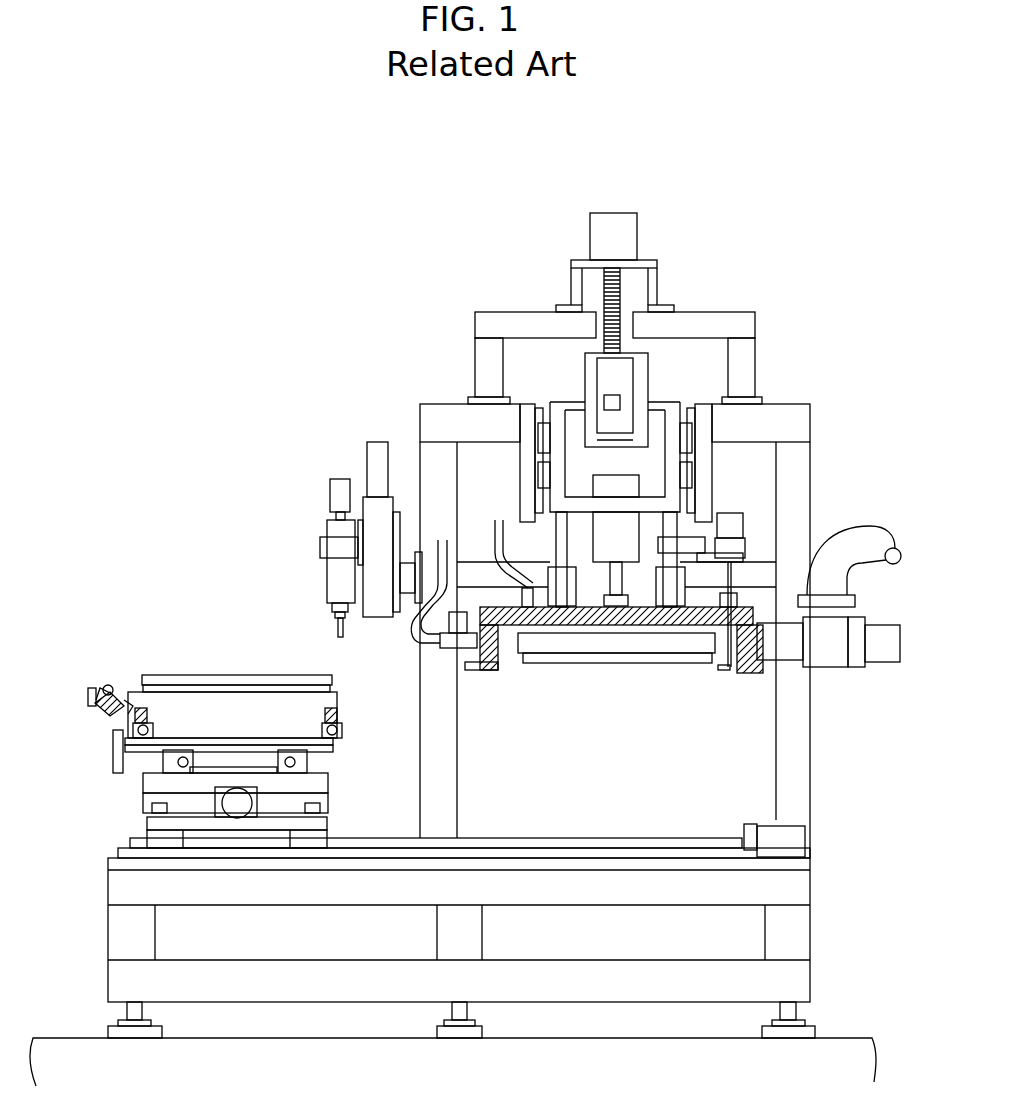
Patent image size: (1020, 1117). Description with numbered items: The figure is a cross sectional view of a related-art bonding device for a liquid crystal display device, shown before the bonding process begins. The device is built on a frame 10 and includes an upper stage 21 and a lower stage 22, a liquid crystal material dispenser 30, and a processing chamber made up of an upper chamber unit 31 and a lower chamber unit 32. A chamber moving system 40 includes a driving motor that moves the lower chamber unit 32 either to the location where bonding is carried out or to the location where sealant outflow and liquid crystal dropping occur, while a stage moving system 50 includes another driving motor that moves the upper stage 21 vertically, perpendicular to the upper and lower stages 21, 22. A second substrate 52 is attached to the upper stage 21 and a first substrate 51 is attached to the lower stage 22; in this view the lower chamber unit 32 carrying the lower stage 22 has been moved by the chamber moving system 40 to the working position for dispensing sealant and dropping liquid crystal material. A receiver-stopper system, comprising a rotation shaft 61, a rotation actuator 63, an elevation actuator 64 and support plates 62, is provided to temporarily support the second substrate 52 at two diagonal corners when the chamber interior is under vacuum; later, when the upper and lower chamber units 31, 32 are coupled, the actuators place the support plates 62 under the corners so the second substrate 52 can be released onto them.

The frame 10 is at (800, 760).
The upper stage 21 is at (622, 640).
The lower stage 22 is at (177, 707).
The liquid crystal material dispenser 30 is at (315, 569).
The upper chamber unit 31 is at (505, 643).
The lower chamber unit 32 is at (112, 718).
The chamber moving system 40 is at (797, 838).
The stage moving system 50 is at (626, 232).
The first substrate 51 is at (225, 672).
The second substrate 52 is at (687, 667).
The rotation shaft 61 is at (733, 577).
The support plates 62 is at (722, 672).
The rotation actuator 63 is at (740, 547).
The elevation actuator 64 is at (740, 525).